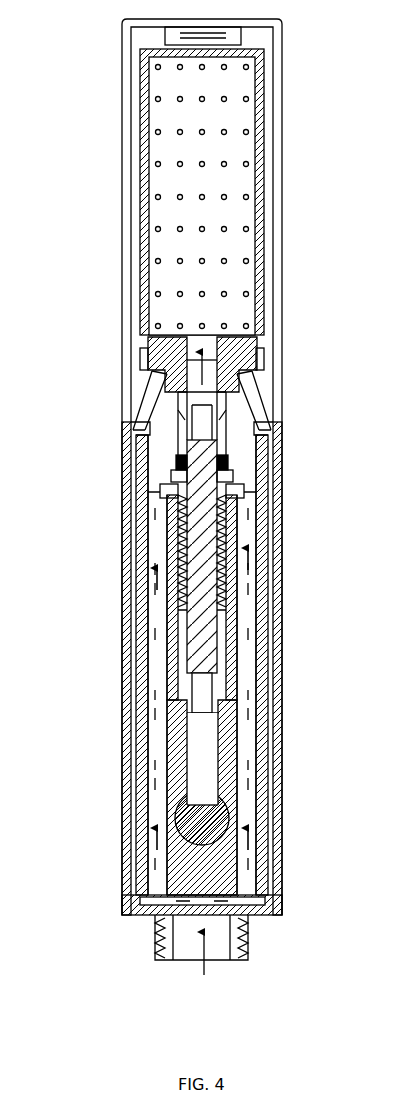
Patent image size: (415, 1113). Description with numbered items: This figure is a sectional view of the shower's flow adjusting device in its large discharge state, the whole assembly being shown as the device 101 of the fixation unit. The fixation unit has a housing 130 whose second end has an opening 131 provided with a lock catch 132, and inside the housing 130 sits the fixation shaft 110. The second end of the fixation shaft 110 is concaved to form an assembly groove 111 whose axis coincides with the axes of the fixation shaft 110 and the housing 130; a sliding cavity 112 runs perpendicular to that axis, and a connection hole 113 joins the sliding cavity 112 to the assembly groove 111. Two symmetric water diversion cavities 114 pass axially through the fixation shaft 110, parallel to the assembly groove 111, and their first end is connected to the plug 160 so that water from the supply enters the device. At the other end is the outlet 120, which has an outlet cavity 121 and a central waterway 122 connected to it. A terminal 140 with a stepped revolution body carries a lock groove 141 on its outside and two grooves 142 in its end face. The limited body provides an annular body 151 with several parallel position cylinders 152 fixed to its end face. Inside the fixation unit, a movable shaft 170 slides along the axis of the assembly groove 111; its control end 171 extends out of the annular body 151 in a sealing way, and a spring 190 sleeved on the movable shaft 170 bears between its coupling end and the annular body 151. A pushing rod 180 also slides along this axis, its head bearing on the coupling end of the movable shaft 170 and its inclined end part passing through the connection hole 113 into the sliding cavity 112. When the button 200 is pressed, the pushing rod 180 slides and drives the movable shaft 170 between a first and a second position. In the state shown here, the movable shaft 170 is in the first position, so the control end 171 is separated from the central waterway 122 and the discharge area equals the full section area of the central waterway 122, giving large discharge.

The housing 101 is at (280, 518).
The fixation shaft 110 is at (222, 768).
The assembly groove 111 is at (175, 598).
The sliding cavity 112 is at (238, 832).
The connection hole 113 is at (180, 770).
The water diversion cavities 114 is at (268, 584).
The outlet 120 is at (265, 150).
The outlet cavity 121 is at (215, 282).
The central waterway 122 is at (190, 348).
The housing 130 is at (277, 732).
The opening 131 is at (132, 352).
The lock catch 132 is at (135, 422).
The terminal 140 is at (135, 436).
The lock groove 141 is at (152, 412).
The grooves 142 is at (170, 491).
The annular body 151 is at (235, 486).
The position cylinders 152 is at (240, 466).
The plug 160 is at (155, 932).
The movable shaft 170 is at (225, 655).
The control end 171 is at (230, 410).
The pushing rod 180 is at (180, 768).
The spring 190 is at (155, 570).
The button 200 is at (196, 820).